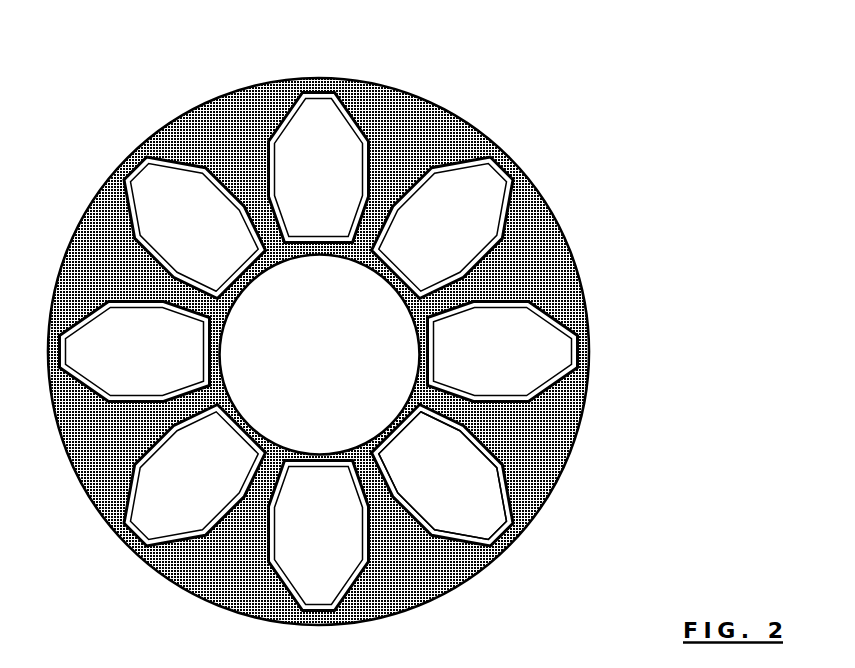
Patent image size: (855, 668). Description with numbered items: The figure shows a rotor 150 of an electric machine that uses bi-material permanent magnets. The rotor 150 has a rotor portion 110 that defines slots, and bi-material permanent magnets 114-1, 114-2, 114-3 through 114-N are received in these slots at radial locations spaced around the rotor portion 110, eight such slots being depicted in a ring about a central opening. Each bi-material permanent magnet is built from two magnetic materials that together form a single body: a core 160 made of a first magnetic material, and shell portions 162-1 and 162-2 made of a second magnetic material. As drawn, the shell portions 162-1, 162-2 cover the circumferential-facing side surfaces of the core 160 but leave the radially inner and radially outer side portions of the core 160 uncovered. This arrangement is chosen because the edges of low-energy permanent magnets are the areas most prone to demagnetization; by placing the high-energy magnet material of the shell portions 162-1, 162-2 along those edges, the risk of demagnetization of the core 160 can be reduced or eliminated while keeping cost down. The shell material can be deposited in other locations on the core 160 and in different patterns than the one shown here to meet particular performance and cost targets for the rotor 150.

The rotor 150 is at (529, 102).
The rotor portion 110 is at (547, 277).
The bi-material permanent magnet 114-1 is at (531, 503).
The bi-material permanent magnet 114-2 is at (560, 306).
The bi-material permanent magnet 114-3 is at (511, 157).
The bi-material permanent magnet 114-N is at (368, 590).
The core 160 is at (468, 470).
The shell portion 162-1 is at (503, 488).
The shell portion 162-2 is at (480, 551).